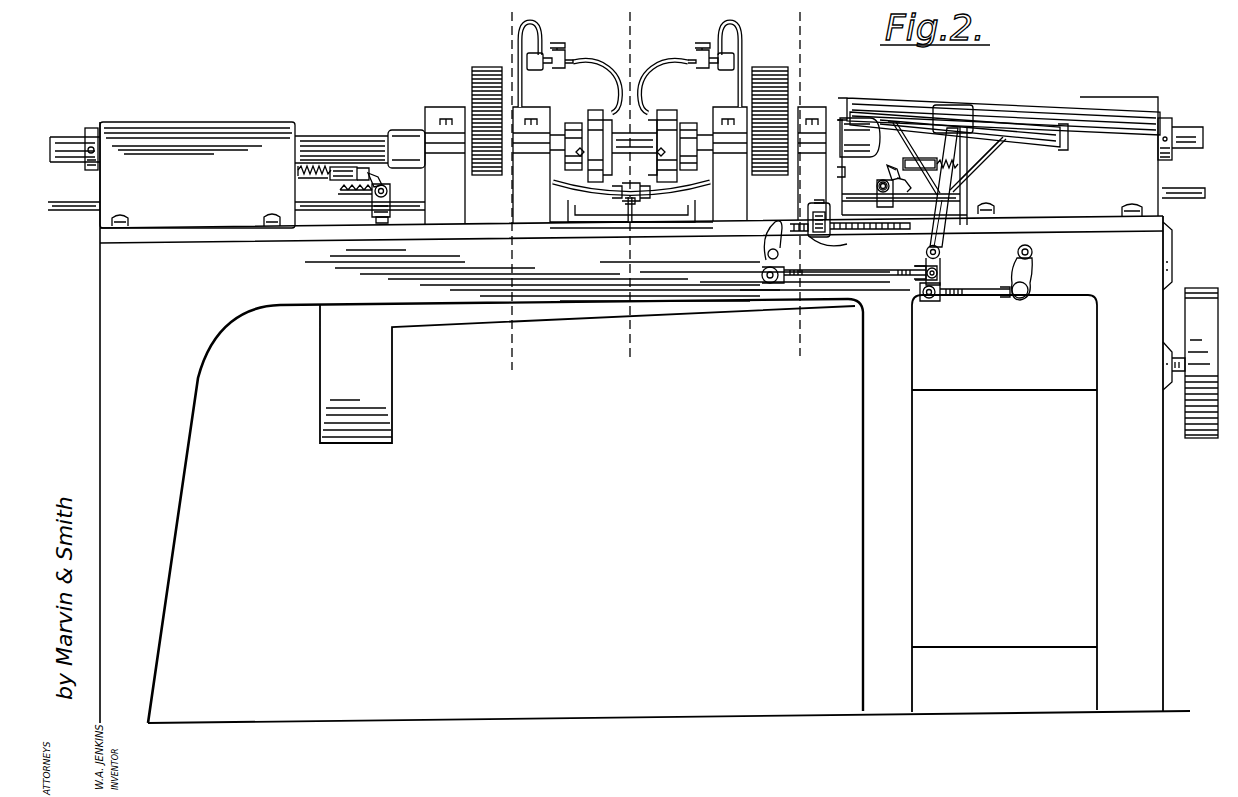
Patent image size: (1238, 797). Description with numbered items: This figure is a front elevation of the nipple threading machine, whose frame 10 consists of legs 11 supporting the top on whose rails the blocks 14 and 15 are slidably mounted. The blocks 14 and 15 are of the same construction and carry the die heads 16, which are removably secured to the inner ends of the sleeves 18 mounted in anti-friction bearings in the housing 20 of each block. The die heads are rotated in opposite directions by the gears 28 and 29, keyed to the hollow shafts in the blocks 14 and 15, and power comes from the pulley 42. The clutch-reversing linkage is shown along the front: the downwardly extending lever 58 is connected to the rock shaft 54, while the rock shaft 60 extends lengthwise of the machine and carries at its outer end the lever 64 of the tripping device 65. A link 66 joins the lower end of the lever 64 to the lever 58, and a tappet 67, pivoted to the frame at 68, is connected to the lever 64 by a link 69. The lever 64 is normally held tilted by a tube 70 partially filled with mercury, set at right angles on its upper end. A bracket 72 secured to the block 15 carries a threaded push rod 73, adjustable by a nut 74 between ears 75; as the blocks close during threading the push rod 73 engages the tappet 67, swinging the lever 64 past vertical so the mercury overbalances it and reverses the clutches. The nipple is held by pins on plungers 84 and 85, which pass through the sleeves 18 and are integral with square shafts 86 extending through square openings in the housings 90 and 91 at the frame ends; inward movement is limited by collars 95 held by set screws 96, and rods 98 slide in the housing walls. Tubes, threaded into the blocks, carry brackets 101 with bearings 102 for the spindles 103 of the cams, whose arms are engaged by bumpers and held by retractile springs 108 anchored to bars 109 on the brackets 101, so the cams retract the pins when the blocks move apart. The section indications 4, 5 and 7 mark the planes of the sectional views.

The section line 4- 4 is at (510, 22).
The section line 5- 5 is at (797, 22).
The section line 7- 7 is at (652, 30).
The frame 10 is at (622, 292).
The legs 11 is at (145, 549).
The block 14 is at (441, 100).
The block 15 is at (846, 92).
The die head 16 is at (594, 113).
The sleeve 18 is at (560, 130).
The housing 20 is at (437, 126).
The gear 28 is at (478, 68).
The gear 29 is at (766, 68).
The pulley 42 is at (1190, 290).
The rock shaft 54 is at (1033, 253).
The lever 58 is at (1028, 276).
The rock shaft 60 is at (940, 252).
The lever 64 is at (965, 221).
The tripping device 65 is at (984, 184).
The link 66 is at (964, 299).
The tappet 67 is at (767, 247).
The pivot 68 is at (762, 273).
The link 69 is at (866, 275).
The tube 70 is at (900, 108).
The bracket 72 is at (809, 205).
The push rod 73 is at (808, 227).
The nut 74 is at (831, 222).
The ears 75 is at (847, 244).
The plunger 84 is at (404, 140).
The plunger 85 is at (856, 132).
The square shaft 86 is at (336, 140).
The housing 90 is at (145, 130).
The housing 91 is at (1070, 120).
The collar 95 is at (90, 128).
The set screw 96 is at (86, 148).
The rod 98 is at (346, 206).
The bracket 101 is at (383, 218).
The bearing 102 is at (390, 206).
The spindle 103 is at (375, 211).
The retractile spring 108 is at (368, 172).
The bar 109 is at (342, 189).